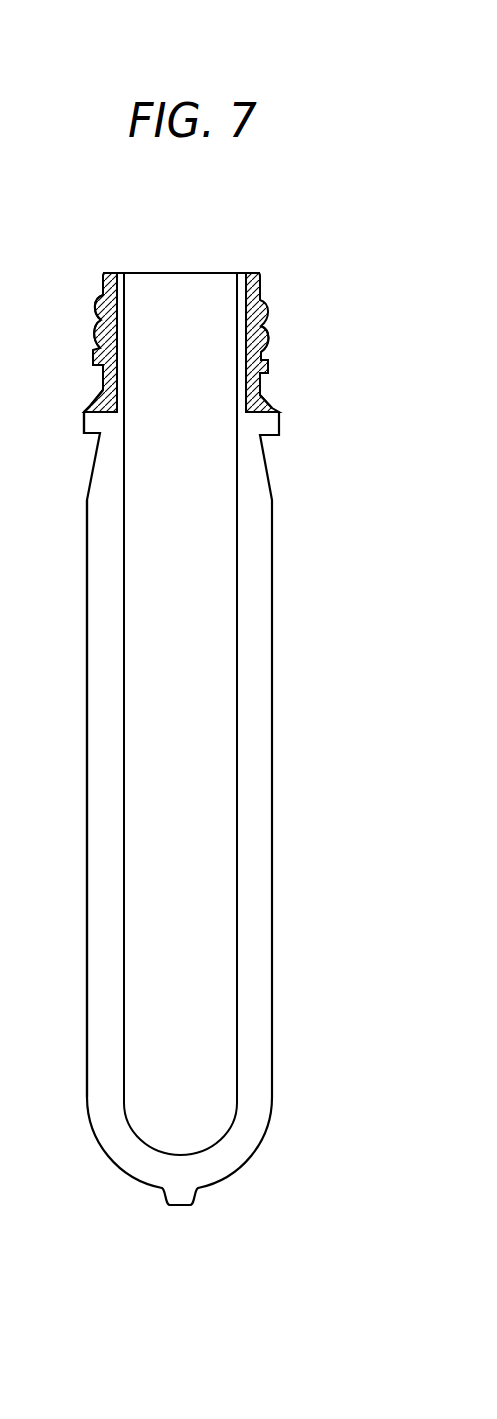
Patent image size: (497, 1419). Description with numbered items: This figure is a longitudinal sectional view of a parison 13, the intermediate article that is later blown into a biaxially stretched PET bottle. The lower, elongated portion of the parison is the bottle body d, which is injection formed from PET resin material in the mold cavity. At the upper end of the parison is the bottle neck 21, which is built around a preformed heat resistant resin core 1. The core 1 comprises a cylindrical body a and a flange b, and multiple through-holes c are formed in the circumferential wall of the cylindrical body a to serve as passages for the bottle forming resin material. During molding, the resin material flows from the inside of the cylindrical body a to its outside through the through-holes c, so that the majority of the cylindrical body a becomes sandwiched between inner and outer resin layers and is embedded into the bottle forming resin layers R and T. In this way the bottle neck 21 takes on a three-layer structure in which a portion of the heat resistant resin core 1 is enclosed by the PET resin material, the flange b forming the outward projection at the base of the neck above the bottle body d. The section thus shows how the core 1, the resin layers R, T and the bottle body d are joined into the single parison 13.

The parison 13 is at (172, 706).
The bottle neck 21 is at (248, 267).
The bottle forming resin layer R is at (128, 300).
The cylindrical body a is at (261, 302).
The through-holes c is at (262, 330).
The bottle forming resin layer T is at (98, 318).
The heat resistant resin core 1 is at (265, 382).
The flange b is at (92, 407).
The bottle body d is at (88, 918).